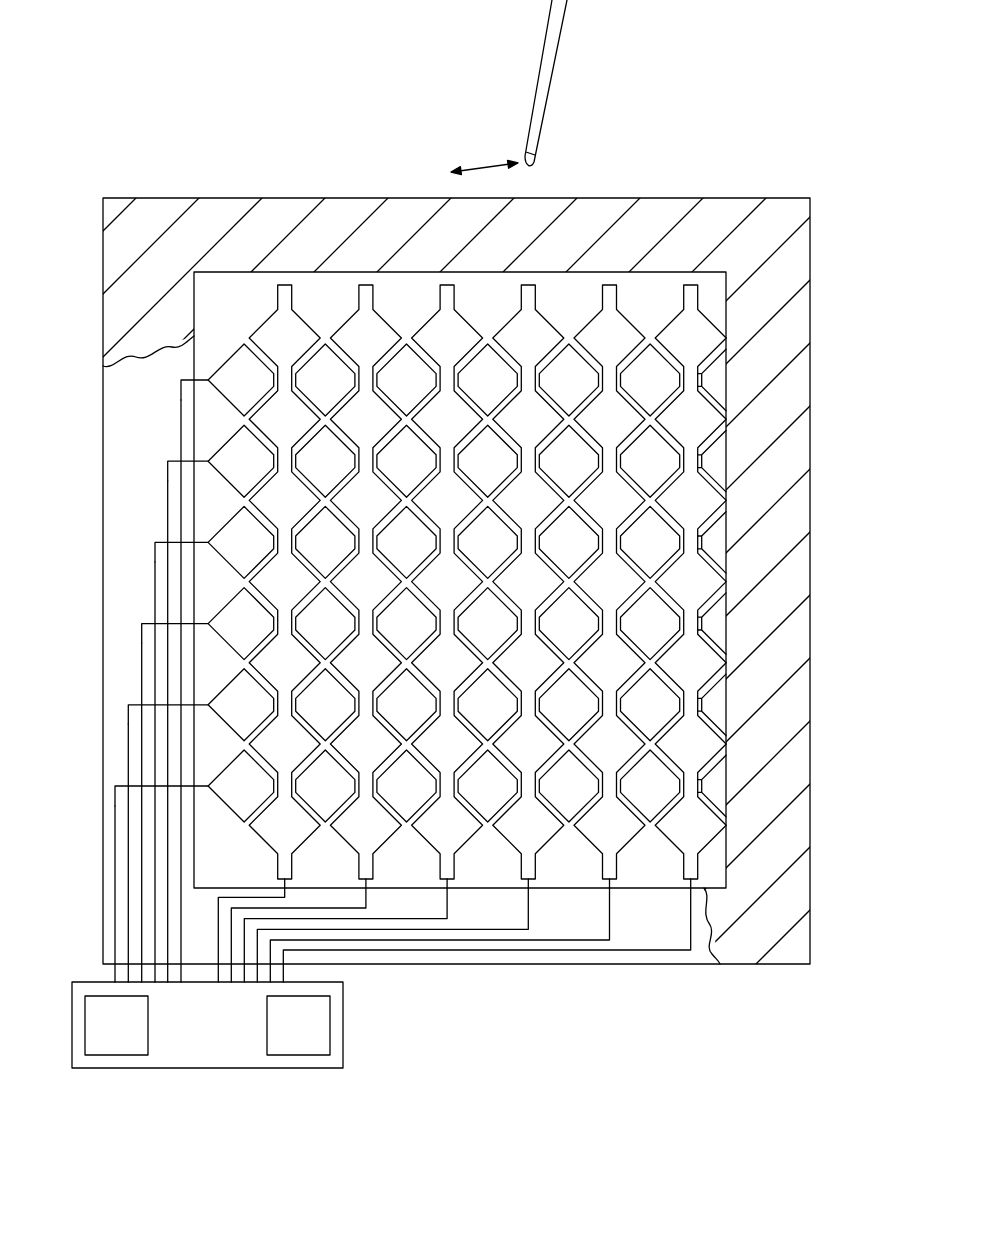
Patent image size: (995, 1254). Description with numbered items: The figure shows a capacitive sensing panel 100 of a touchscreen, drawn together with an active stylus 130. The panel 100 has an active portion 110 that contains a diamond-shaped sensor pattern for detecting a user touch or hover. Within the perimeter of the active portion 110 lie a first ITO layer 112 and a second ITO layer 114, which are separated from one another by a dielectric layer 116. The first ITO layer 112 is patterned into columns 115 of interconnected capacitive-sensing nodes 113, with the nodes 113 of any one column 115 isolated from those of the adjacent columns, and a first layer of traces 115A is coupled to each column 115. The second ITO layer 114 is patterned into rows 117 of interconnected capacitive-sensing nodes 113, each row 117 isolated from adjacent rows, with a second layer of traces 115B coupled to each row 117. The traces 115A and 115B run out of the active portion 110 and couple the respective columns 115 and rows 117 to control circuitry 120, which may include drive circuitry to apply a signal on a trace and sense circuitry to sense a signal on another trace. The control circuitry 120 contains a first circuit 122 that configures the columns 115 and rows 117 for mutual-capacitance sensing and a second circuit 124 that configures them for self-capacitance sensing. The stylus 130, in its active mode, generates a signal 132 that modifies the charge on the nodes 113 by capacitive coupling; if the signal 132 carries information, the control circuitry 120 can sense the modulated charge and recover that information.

The capacitive sensing panel 100 is at (170, 84).
The active portion 110 is at (733, 640).
The first ITO layer 112 is at (461, 515).
The capacitive-sensing nodes 113 is at (702, 412).
The second ITO layer 114 is at (229, 363).
The columns 115 is at (606, 266).
The first layer of traces 115A is at (495, 953).
The second layer of traces 115B is at (128, 742).
The dielectric layer 116 is at (236, 287).
The rows 117 is at (162, 461).
The control circuitry 120 is at (228, 1038).
The first circuit 122 is at (137, 1040).
The second circuit 124 is at (318, 1040).
The stylus 130 is at (557, 63).
The signal 132 is at (478, 168).